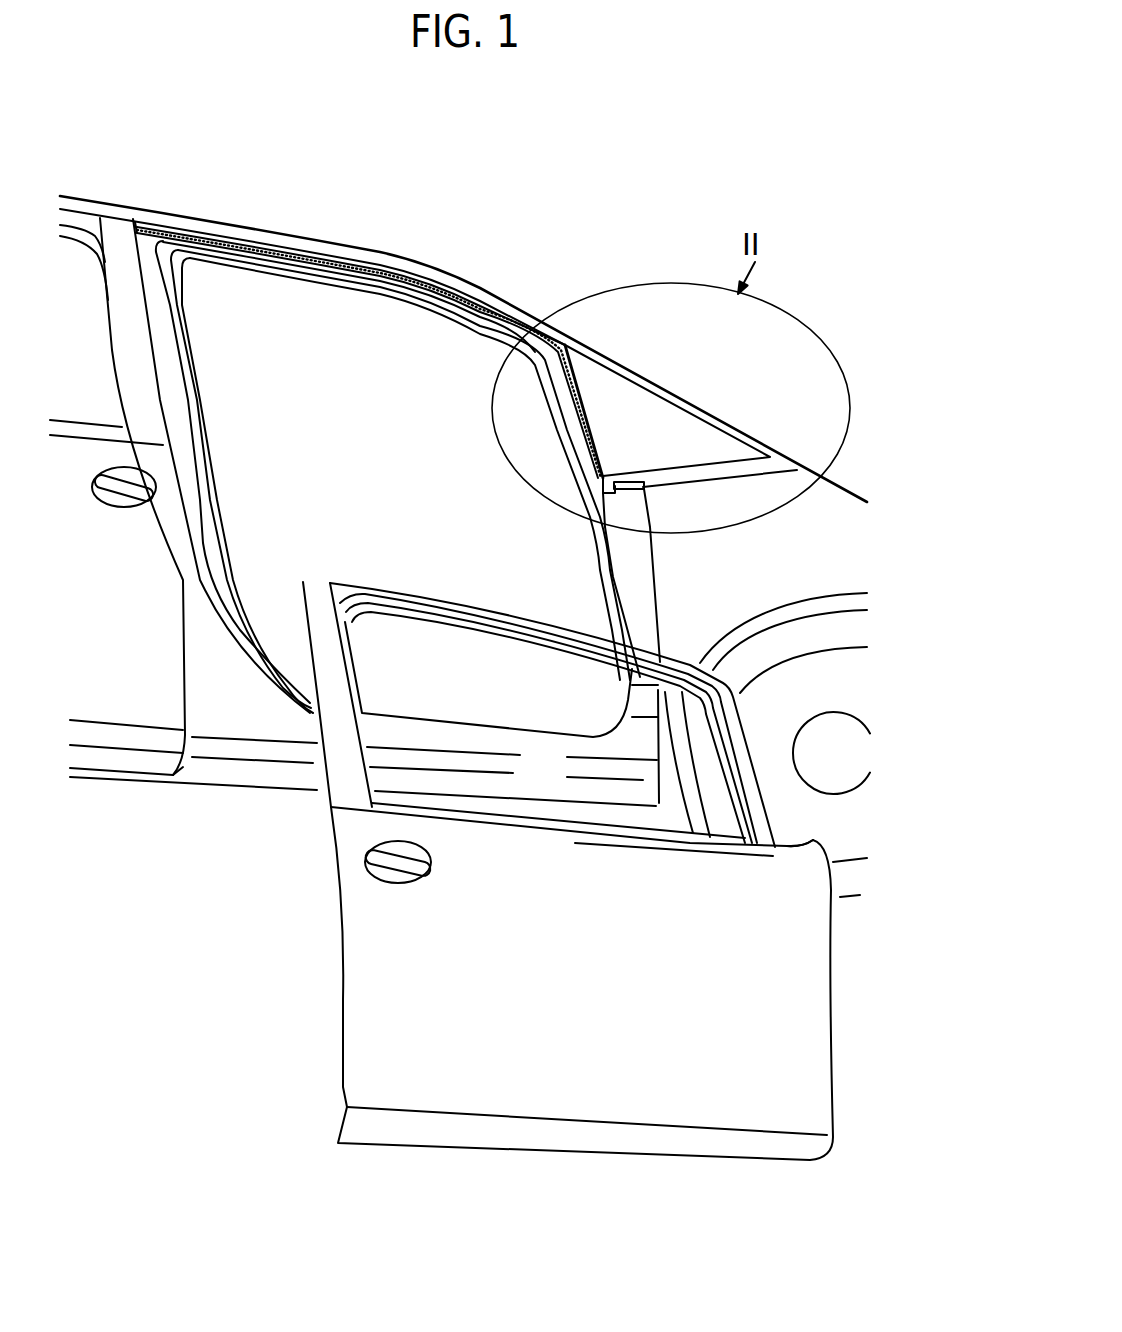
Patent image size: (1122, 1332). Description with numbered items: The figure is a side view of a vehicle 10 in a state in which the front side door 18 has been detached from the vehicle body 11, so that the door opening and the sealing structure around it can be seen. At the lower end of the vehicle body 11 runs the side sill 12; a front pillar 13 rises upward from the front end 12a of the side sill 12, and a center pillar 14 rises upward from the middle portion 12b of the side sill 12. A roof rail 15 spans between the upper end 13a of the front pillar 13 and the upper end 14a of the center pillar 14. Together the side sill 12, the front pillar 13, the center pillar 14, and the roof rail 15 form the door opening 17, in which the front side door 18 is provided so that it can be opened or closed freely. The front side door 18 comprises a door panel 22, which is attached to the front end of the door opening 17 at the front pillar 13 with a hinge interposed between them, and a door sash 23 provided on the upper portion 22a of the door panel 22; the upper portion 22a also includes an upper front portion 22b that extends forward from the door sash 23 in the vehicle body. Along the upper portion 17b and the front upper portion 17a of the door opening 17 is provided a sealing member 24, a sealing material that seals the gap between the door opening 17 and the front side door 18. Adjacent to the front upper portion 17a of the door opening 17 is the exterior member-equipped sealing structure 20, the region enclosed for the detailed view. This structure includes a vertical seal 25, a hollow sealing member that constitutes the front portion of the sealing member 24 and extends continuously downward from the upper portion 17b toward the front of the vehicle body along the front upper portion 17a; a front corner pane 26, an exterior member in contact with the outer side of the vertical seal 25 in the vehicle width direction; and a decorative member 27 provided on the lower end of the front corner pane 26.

The vehicle 10 is at (514, 164).
The vehicle body 11 is at (398, 252).
The side sill 12 is at (290, 782).
The front end 12a is at (637, 799).
The middle portion 12b is at (199, 773).
The front pillar 13 is at (622, 542).
The upper end 13a is at (545, 350).
The center pillar 14 is at (188, 462).
The upper end 14a is at (150, 242).
The roof rail 15 is at (457, 287).
The door opening 17 is at (262, 262).
The front upper portion 17a is at (587, 450).
The upper portion 17b is at (410, 288).
The front side door 18 is at (329, 992).
The exterior member-equipped sealing structure 20 is at (679, 387).
The door panel 22 is at (353, 930).
The upper portion 22a is at (540, 827).
The upper front portion 22b is at (797, 843).
The door sash 23 is at (740, 757).
The sealing member 24 is at (350, 260).
The vertical seal 25 is at (580, 457).
The front corner pane 26 is at (695, 443).
The decorative member 27 is at (630, 490).